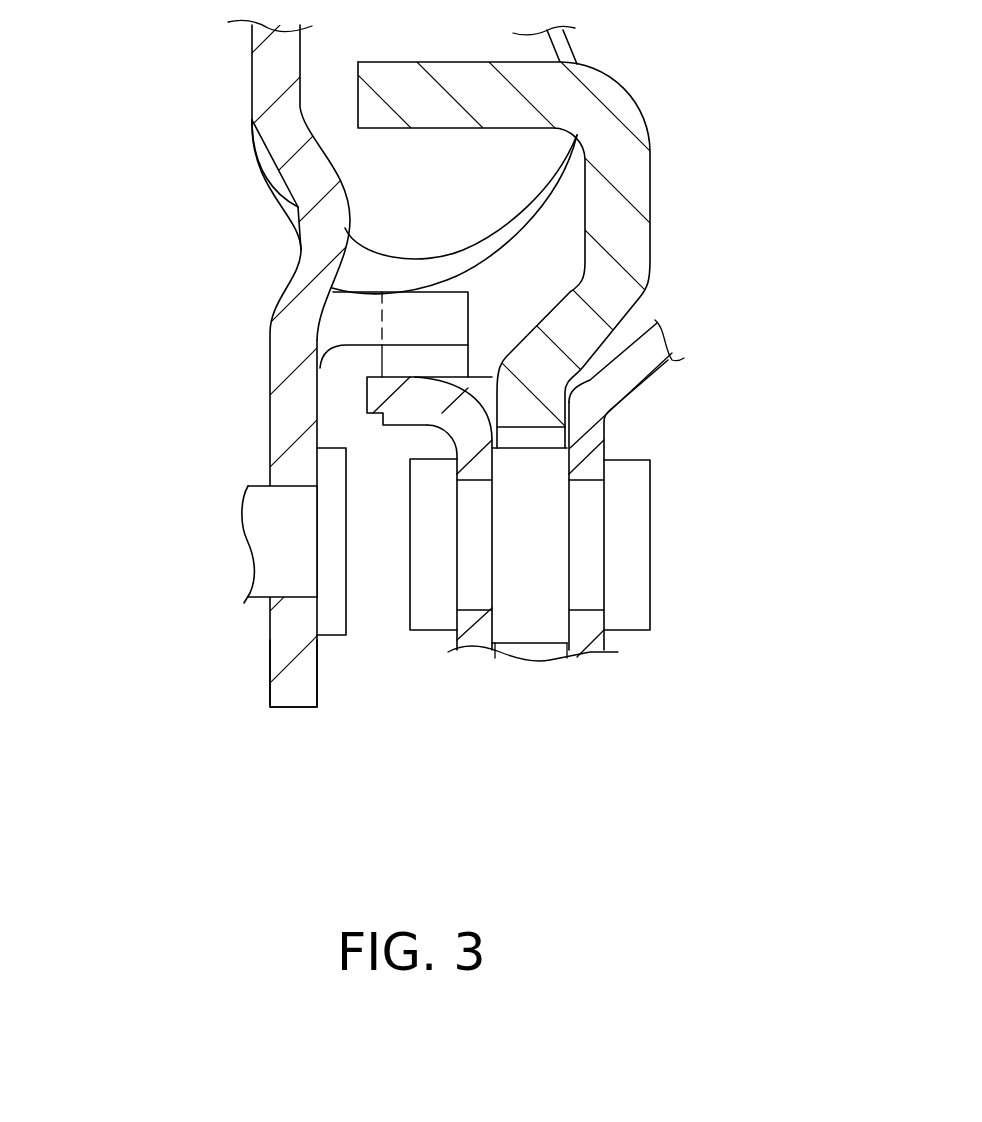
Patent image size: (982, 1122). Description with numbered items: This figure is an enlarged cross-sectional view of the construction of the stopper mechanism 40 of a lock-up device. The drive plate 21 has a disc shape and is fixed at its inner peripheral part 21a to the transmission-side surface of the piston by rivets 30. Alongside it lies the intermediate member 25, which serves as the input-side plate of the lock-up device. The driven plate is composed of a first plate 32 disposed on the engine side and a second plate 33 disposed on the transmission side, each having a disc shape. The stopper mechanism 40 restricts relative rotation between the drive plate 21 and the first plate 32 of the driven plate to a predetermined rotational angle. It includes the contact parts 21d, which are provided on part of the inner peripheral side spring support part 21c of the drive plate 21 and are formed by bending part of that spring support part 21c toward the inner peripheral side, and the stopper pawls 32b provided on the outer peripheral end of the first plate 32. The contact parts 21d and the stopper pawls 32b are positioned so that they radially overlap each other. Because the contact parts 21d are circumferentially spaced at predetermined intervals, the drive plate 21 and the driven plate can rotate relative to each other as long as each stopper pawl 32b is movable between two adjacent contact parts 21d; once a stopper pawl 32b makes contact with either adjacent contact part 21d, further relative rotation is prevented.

The drive plate 21 is at (250, 82).
The inner peripheral part 21a is at (282, 652).
The inner peripheral side spring support part 21c is at (417, 310).
The contact parts 21d is at (397, 360).
The intermediate member 25 is at (633, 130).
The rivets 30 is at (258, 524).
The first plate 32 is at (470, 635).
The stopper pawls 32b is at (392, 393).
The second plate 33 is at (632, 377).
The stopper mechanism 40 is at (482, 313).